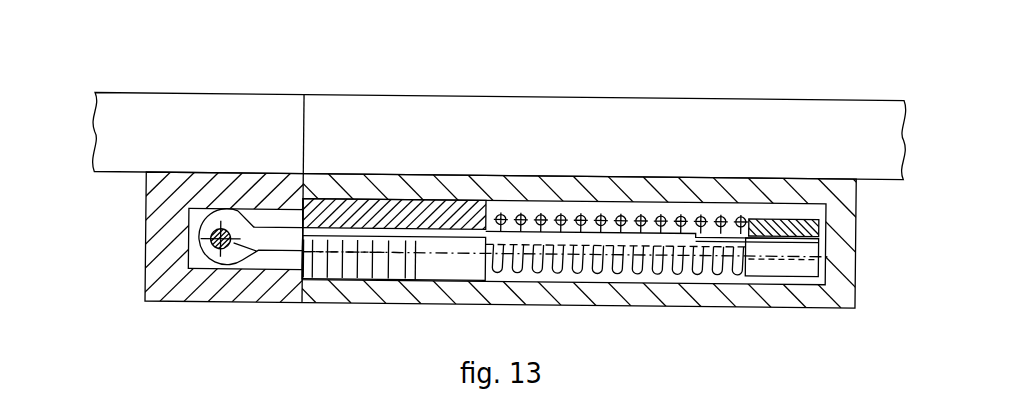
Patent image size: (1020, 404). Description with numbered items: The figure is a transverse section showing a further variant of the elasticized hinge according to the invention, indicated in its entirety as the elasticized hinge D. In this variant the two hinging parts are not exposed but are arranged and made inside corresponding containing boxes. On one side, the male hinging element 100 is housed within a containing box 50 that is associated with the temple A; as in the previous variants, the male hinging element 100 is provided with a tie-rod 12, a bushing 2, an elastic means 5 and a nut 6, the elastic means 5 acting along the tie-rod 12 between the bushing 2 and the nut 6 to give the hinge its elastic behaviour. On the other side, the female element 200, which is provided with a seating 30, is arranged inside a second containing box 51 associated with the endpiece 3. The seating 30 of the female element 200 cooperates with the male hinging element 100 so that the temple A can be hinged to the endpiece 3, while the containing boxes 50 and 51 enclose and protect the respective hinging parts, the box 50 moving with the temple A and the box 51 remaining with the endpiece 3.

The endpiece 3 is at (178, 108).
The temple A is at (558, 108).
The female element 200 is at (251, 190).
The bushing 2 is at (373, 212).
The tie-rod 12 is at (580, 235).
The elastic means 5 is at (665, 218).
The nut 6 is at (780, 218).
The containing box 51 is at (155, 257).
The seating 30 is at (254, 261).
The elasticized hinge D is at (326, 324).
The male hinging element 100 is at (657, 296).
The containing box 50 is at (808, 297).